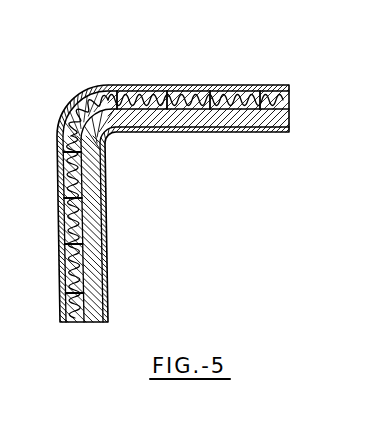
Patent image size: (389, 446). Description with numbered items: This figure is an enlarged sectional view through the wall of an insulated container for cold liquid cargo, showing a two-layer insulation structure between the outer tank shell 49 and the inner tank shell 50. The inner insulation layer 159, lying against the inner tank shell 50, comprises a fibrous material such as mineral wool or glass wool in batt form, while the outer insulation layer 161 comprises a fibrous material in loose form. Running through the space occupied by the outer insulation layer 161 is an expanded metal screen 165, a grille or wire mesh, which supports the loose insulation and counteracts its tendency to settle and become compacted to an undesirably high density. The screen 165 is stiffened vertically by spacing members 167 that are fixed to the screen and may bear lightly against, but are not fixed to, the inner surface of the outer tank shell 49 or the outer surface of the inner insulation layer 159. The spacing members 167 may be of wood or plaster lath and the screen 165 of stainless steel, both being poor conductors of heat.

The outer tank shell 49 is at (60, 168).
The inner tank shell 50 is at (188, 131).
The inner insulation layer 159 is at (93, 266).
The outer insulation layer 161 is at (72, 276).
The expanded metal screen 165 is at (72, 217).
The spacing members 167 is at (72, 244).